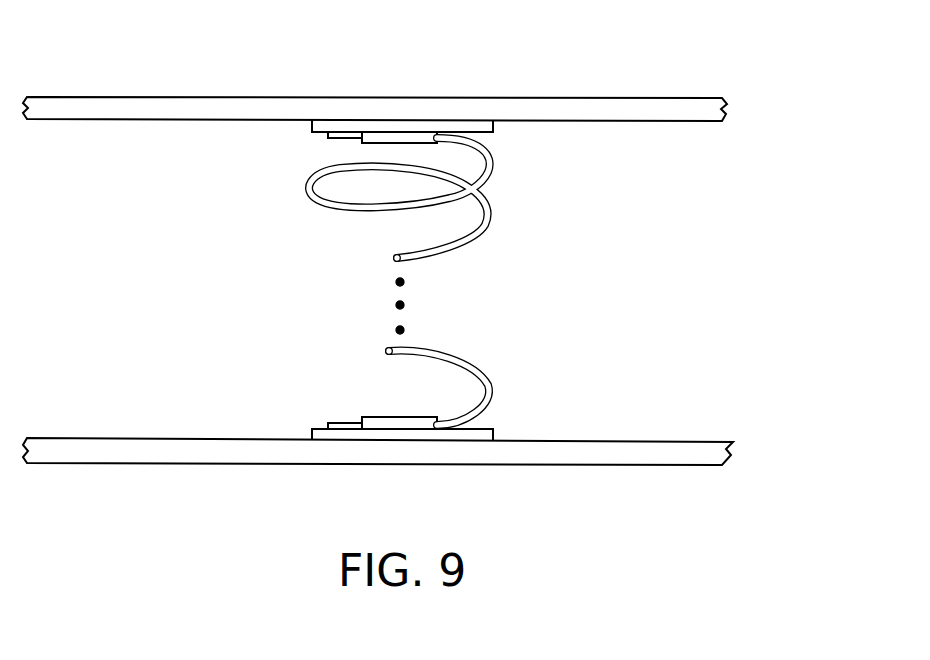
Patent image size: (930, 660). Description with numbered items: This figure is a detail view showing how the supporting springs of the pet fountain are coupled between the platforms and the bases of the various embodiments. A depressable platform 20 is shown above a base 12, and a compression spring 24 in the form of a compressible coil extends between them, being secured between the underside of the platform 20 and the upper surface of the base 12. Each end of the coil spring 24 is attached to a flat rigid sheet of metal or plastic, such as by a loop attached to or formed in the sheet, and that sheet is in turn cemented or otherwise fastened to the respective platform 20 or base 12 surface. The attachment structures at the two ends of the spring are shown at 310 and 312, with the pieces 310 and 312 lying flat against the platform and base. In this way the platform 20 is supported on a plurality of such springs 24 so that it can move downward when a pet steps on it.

The depressable platform 20 is at (100, 97).
The base 12 is at (112, 463).
The contact pad 310 is at (312, 125).
The solder / bonding pad 312 is at (375, 144).
The compression spring 24 is at (490, 217).